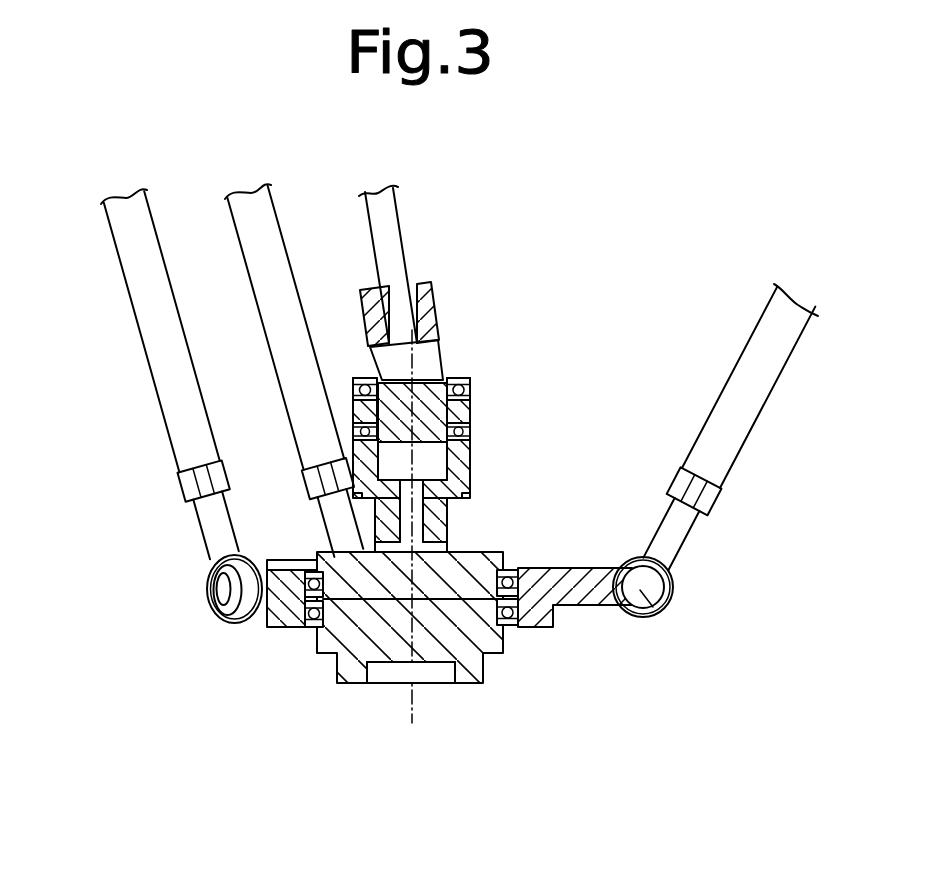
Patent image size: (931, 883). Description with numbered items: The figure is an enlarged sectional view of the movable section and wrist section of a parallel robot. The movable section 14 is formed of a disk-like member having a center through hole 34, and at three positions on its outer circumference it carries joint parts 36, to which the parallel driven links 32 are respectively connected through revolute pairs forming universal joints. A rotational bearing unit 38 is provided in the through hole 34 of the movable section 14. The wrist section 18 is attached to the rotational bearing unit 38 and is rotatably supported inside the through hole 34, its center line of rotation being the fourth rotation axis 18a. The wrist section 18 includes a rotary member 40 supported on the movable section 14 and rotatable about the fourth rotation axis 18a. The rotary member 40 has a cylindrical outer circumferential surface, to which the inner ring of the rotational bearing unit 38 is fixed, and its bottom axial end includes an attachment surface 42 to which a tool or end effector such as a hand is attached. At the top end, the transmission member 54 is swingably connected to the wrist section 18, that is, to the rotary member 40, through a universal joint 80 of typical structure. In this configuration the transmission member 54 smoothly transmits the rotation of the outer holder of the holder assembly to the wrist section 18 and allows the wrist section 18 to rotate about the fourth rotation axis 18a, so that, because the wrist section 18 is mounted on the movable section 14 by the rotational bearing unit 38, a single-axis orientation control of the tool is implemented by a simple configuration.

The movable section 14 is at (547, 638).
The wrist section 18 is at (330, 676).
The fourth rotation axis 18a is at (411, 706).
The driven links 32 is at (140, 292).
The center through hole 34 is at (303, 628).
The joint parts 36 is at (660, 614).
The rotational bearing unit 38 is at (513, 569).
The rotary member 40 is at (483, 668).
The attachment surface 42 is at (435, 683).
The transmission member 54 is at (390, 228).
The universal joint 80 is at (453, 350).